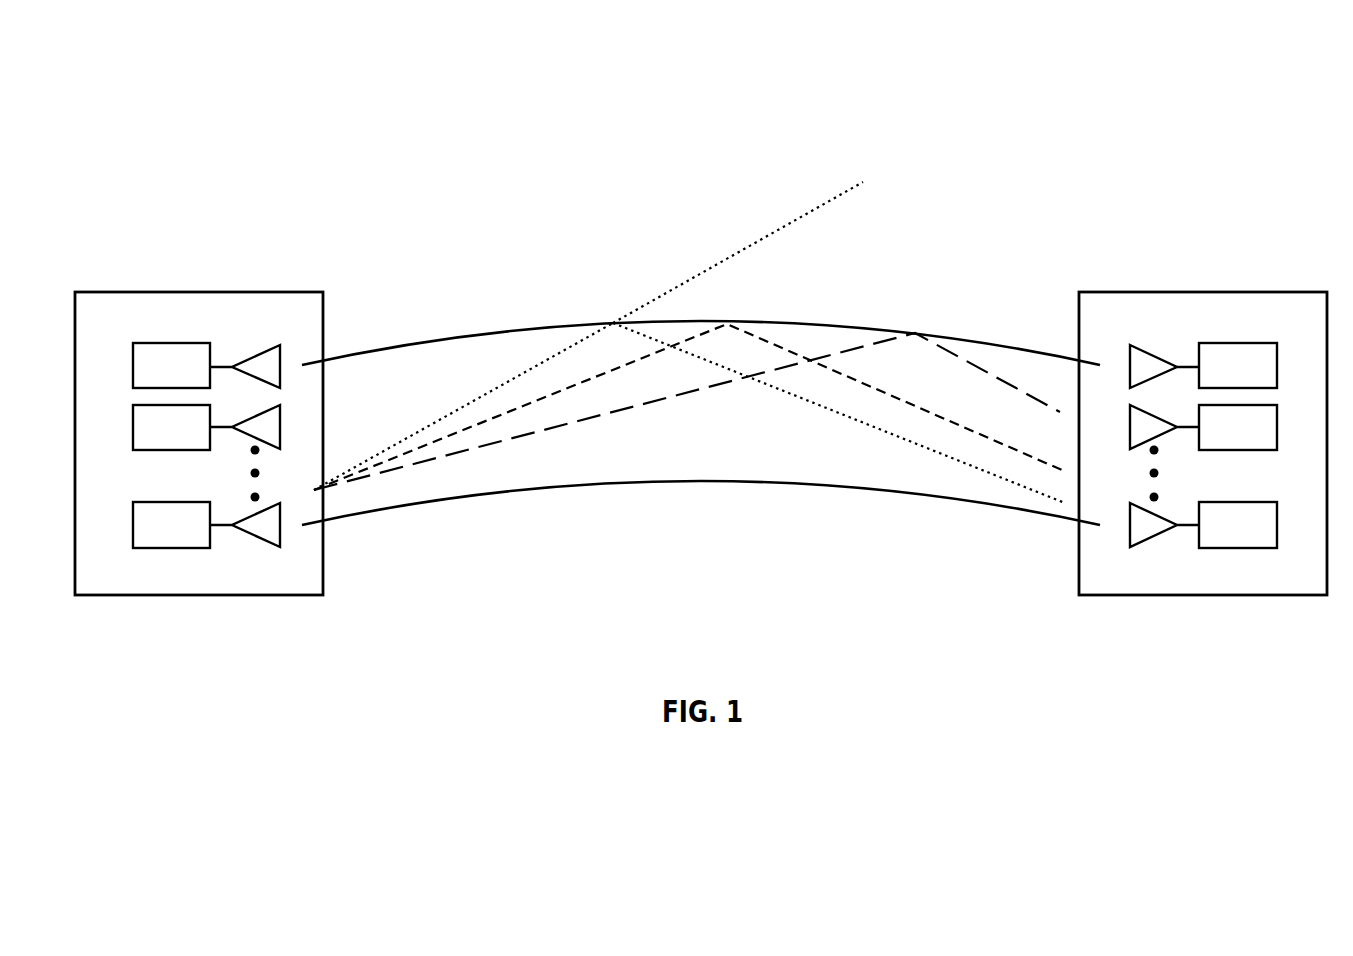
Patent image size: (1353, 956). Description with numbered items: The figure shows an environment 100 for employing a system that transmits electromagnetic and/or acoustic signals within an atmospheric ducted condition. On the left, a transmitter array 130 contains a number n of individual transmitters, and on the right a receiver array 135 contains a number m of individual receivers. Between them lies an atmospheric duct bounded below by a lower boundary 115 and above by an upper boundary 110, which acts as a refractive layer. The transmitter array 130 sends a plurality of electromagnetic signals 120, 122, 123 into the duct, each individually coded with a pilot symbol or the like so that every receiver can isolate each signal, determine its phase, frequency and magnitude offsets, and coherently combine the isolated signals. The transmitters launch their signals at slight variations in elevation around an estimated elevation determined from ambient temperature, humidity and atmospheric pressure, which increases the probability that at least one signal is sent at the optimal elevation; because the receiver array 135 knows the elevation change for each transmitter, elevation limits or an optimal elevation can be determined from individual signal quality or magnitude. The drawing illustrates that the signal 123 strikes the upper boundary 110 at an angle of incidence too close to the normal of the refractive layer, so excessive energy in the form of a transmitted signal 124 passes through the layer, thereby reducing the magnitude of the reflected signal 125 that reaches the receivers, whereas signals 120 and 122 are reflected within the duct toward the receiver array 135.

The environment 100 is at (288, 48).
The upper boundary 110 is at (983, 341).
The lower boundary 115 is at (778, 492).
The electromagnetic signal 120 is at (538, 444).
The electromagnetic signal 122 is at (470, 435).
The electromagnetic signal 123 is at (455, 398).
The transmitted signal 124 is at (734, 243).
The reflected signal 125 is at (853, 430).
The transmitter array 130 is at (199, 290).
The receiver array 135 is at (1204, 290).